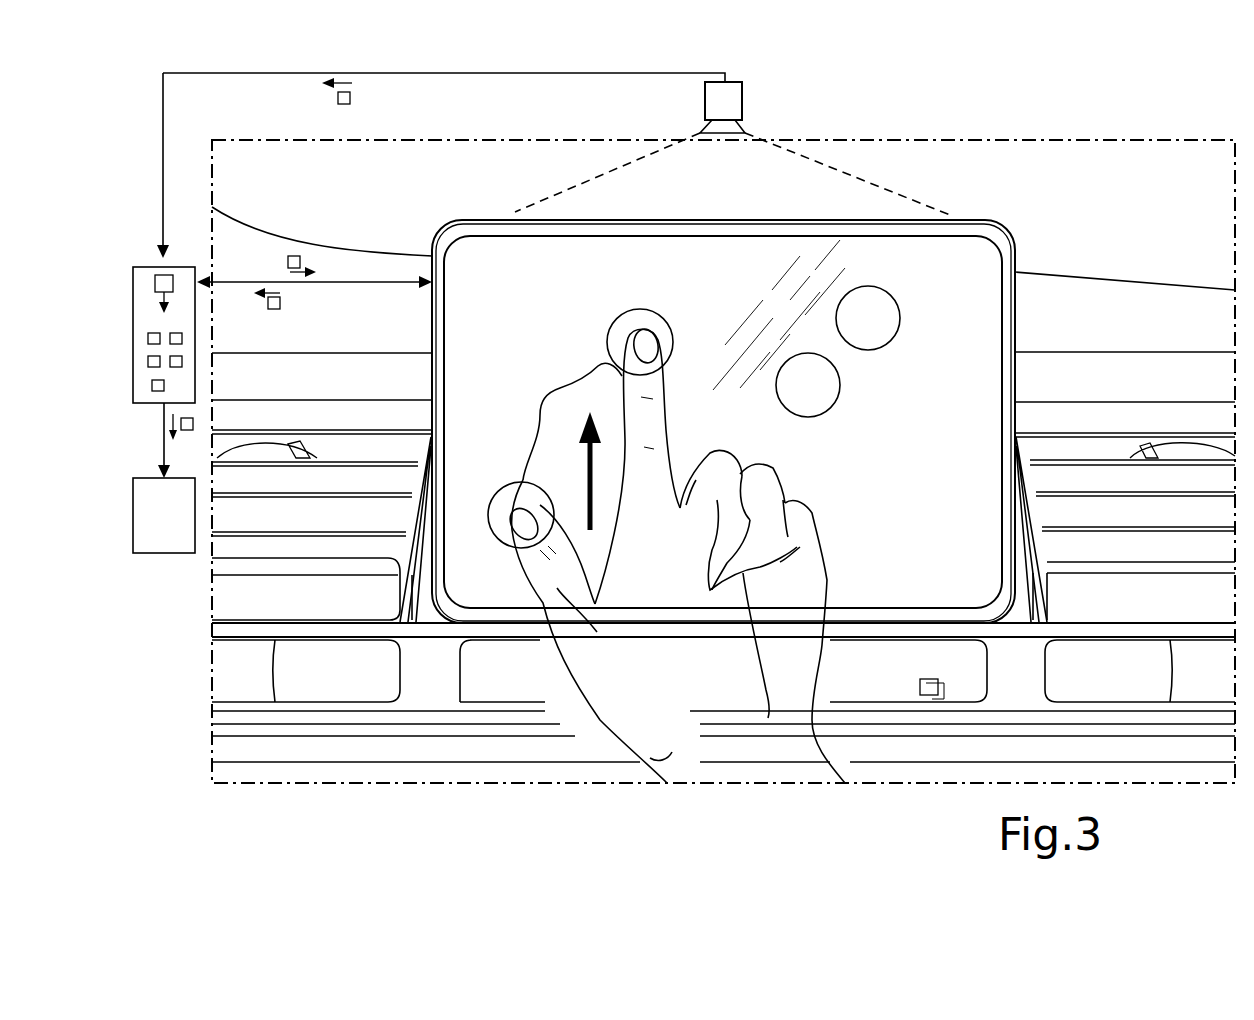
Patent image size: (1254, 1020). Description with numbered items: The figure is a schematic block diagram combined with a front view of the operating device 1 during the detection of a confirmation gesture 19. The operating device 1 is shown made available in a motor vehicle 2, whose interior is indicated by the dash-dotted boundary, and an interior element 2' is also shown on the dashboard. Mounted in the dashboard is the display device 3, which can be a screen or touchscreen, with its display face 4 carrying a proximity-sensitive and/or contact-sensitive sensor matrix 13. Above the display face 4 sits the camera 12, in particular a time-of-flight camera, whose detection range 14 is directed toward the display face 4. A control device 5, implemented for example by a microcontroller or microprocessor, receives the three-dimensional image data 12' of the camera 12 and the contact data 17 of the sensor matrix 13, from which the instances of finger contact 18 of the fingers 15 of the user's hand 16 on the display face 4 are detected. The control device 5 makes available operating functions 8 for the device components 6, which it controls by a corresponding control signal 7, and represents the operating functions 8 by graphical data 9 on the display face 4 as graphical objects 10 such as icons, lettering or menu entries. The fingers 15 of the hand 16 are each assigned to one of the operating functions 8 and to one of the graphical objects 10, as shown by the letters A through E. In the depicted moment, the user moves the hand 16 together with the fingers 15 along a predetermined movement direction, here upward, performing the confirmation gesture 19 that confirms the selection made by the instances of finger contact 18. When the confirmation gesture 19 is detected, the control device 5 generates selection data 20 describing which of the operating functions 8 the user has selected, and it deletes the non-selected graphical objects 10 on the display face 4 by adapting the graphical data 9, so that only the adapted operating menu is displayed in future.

The operating device 1 is at (945, 142).
The motor vehicle 2 is at (723, 429).
The interior component 2' is at (1022, 644).
The display device 3 is at (1030, 297).
The display face 4 is at (957, 222).
The control device 5 is at (178, 265).
The device components 6 is at (165, 555).
The control signal 7 is at (187, 430).
The operating functions 8 is at (148, 338).
The graphical data 9 is at (288, 262).
The graphical object 10 is at (890, 305).
The camera 12 is at (487, 103).
The 3D image data 12' is at (363, 94).
The sensor matrix 13 is at (1020, 246).
The detection range 14 is at (832, 168).
The fingers 15 is at (652, 420).
The hand 16 is at (724, 704).
The contact data 17 is at (281, 304).
The finger contact 18 is at (565, 388).
The confirmation gesture 19 is at (586, 473).
The selection data 20 is at (158, 268).